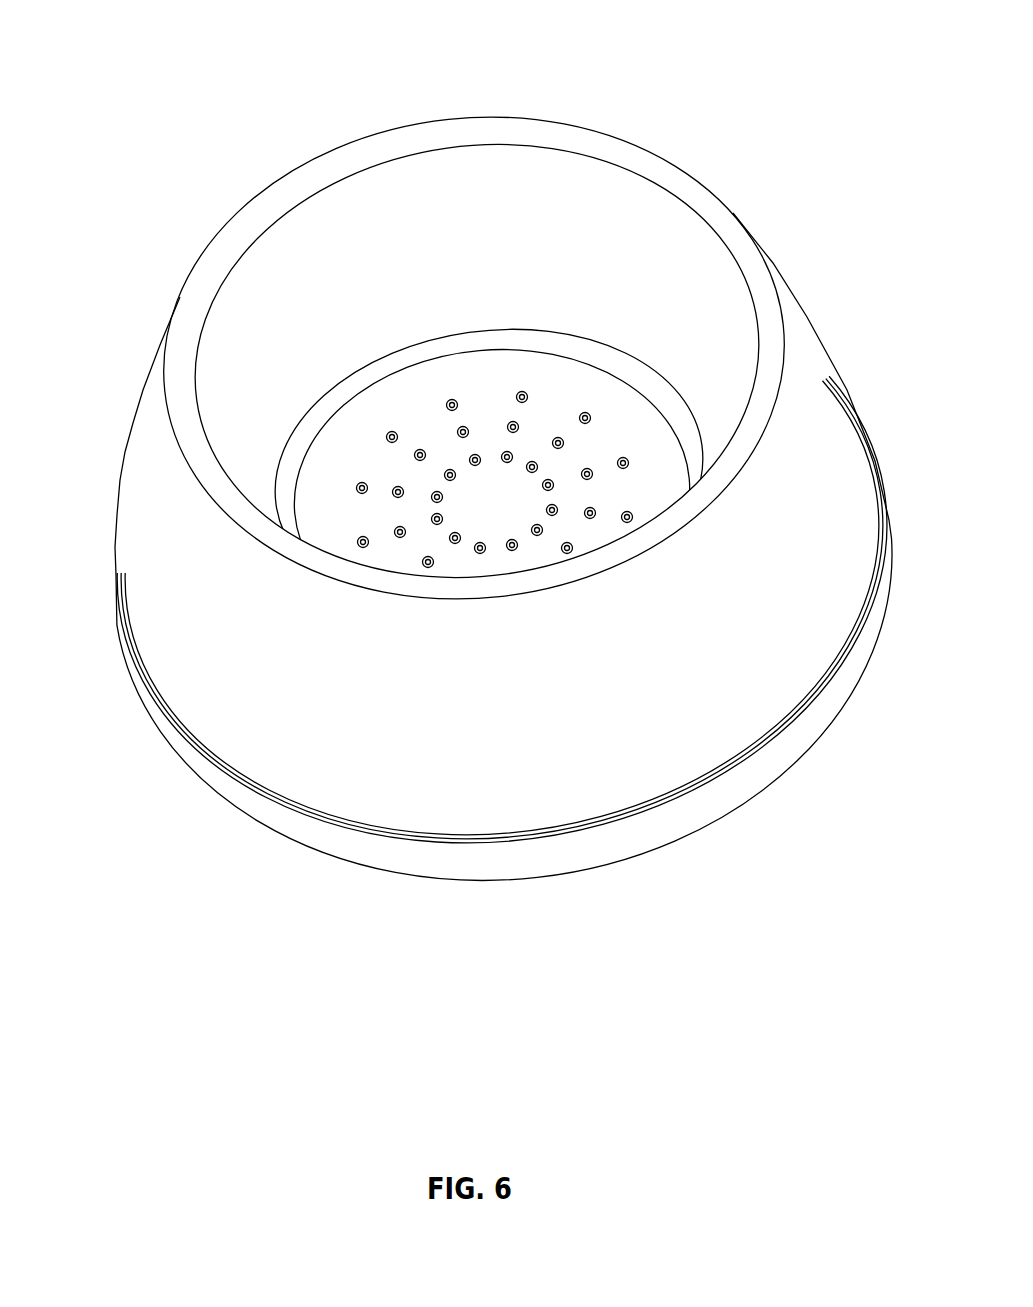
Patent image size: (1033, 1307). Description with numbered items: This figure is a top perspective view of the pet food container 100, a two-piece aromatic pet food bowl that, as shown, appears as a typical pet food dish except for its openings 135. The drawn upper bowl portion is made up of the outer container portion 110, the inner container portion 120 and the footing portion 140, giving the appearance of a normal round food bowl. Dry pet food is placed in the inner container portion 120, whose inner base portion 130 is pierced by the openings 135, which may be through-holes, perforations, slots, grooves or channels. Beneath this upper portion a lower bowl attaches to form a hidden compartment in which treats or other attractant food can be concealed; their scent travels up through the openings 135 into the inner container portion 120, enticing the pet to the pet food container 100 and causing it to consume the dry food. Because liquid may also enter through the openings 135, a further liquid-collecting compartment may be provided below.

The pet food container 100 is at (514, 43).
The outer container portion 110 is at (823, 420).
The inner container portion 120 is at (632, 238).
The inner base portion 130 is at (383, 402).
The openings 135 is at (355, 492).
The footing portion 140 is at (265, 818).